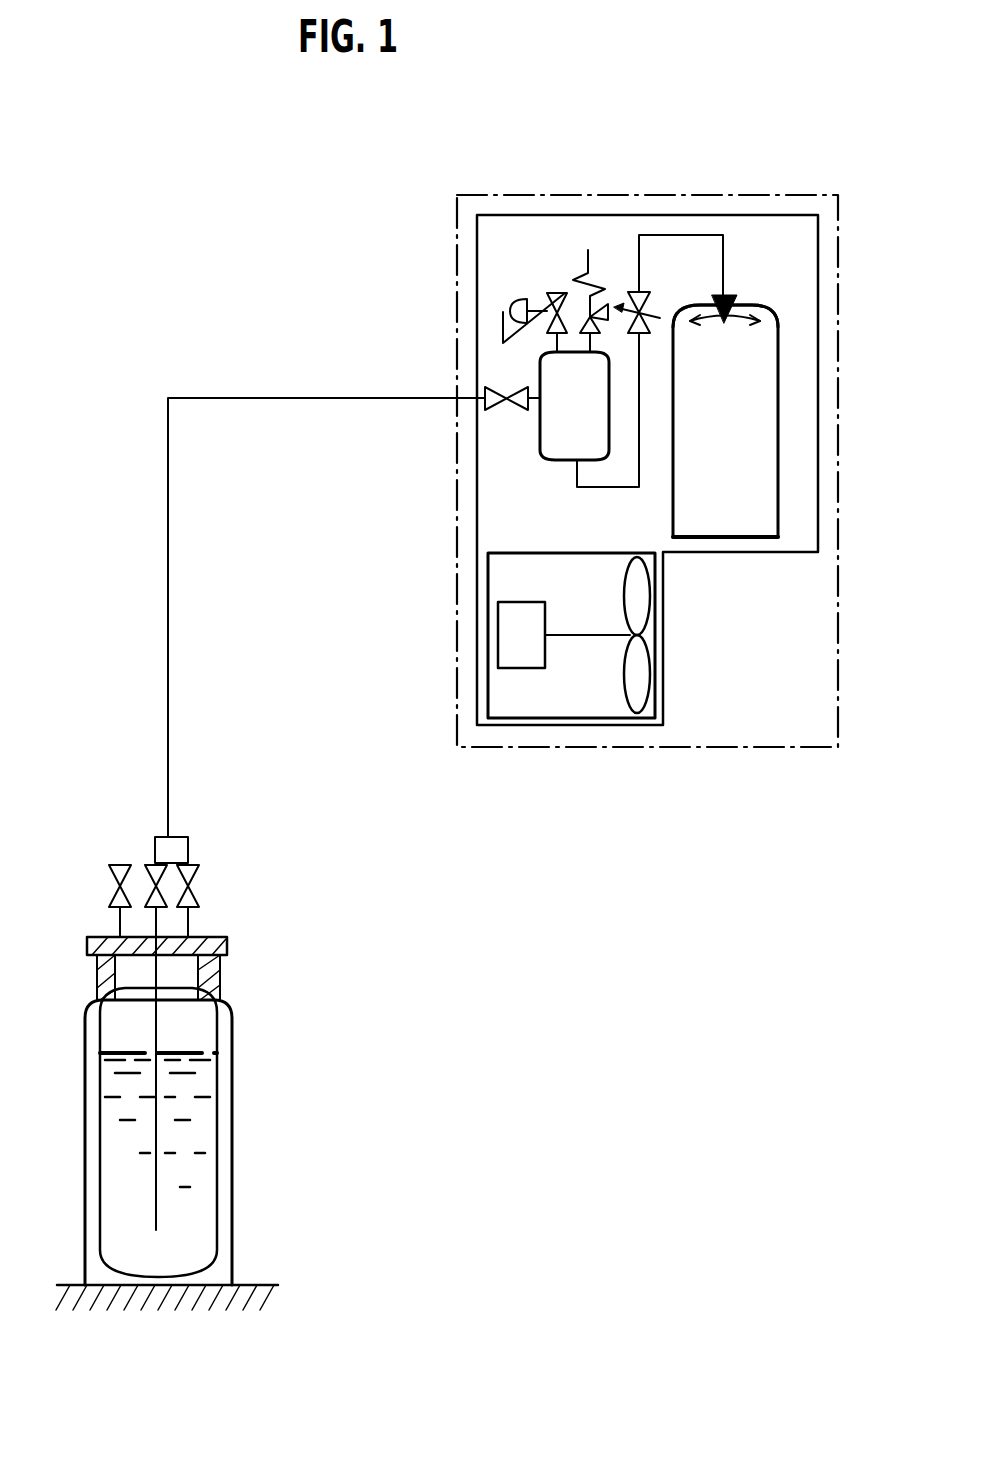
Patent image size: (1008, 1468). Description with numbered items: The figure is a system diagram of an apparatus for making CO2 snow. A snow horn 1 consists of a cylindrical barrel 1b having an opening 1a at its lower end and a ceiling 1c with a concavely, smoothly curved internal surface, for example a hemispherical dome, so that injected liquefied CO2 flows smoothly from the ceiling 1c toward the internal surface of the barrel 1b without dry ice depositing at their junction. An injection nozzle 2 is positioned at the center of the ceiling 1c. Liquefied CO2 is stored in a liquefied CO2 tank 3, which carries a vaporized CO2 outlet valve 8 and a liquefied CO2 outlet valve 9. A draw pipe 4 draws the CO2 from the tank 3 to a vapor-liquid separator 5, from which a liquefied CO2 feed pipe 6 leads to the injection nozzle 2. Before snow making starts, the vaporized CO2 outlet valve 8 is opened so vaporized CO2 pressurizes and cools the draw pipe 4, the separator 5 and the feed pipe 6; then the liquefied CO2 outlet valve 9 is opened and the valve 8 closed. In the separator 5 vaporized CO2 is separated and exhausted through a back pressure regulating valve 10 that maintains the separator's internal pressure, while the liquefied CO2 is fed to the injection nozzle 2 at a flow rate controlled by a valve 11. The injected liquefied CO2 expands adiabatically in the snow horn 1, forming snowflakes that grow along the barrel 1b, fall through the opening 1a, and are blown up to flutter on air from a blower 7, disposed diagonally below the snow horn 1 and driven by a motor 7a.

The snow horn 1 is at (783, 473).
The opening 1a is at (745, 540).
The cylindrical barrel 1b is at (779, 397).
The ceiling 1c is at (770, 312).
The injection nozzle 2 is at (728, 300).
The liquefied CO2 tank 3 is at (222, 1155).
The draw pipe 4 is at (295, 398).
The vapor-liquid separator 5 is at (553, 460).
The liquefied CO2 feed pipe 6 is at (683, 235).
The blower 7 is at (543, 720).
The motor 7a is at (517, 672).
The vaporized CO2 outlet valve 8 is at (195, 868).
The liquefied CO2 outlet valve 9 is at (150, 865).
The back pressure regulating valve 10 is at (558, 308).
The valve 11 is at (636, 305).